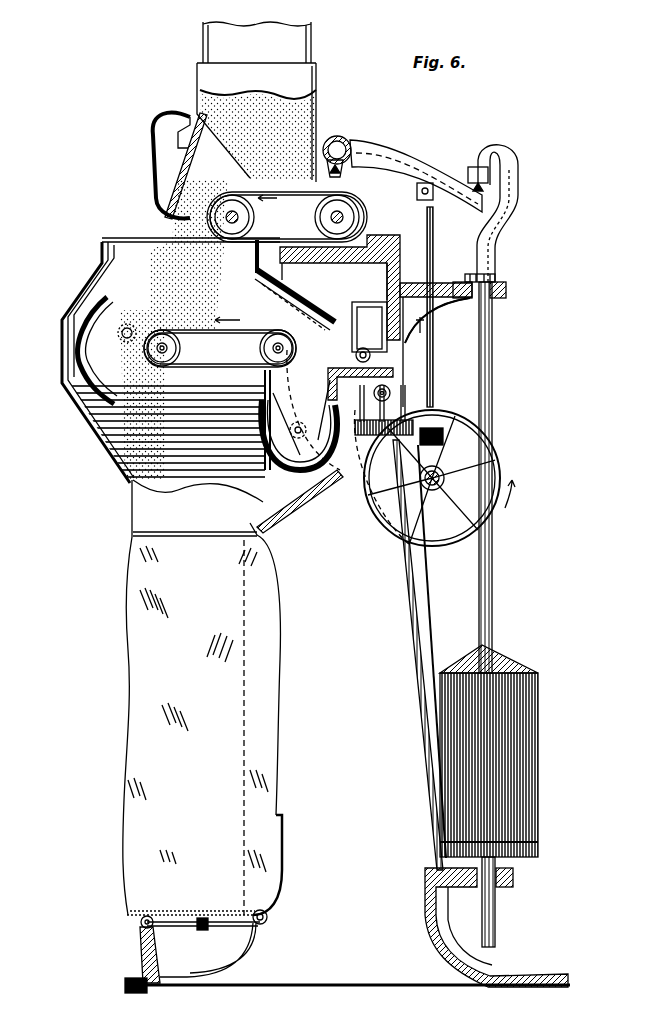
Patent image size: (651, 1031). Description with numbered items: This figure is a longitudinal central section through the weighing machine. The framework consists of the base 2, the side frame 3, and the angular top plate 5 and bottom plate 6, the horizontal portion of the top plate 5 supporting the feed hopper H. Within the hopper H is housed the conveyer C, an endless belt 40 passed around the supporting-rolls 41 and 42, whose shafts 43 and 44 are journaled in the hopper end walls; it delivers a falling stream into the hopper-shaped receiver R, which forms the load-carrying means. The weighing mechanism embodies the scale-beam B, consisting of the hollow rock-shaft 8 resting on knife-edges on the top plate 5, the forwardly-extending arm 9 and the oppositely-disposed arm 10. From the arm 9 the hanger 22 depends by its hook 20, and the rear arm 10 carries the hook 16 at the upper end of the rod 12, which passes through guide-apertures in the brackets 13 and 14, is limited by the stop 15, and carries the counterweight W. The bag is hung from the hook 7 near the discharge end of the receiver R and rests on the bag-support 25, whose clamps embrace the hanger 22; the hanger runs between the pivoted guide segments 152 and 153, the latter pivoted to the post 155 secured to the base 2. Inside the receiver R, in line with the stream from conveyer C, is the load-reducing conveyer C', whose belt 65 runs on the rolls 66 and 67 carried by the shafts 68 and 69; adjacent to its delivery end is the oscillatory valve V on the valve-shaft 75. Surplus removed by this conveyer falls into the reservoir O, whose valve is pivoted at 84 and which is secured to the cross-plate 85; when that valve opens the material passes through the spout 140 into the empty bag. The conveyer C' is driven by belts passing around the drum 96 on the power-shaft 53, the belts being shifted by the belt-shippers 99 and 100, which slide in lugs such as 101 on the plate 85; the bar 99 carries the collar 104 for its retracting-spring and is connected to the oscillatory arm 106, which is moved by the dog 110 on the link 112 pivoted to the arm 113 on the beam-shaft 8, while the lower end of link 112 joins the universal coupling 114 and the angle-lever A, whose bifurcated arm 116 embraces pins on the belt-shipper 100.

The base 2 is at (372, 986).
The side frame 3 is at (420, 630).
The top plate 5 is at (376, 321).
The bottom plate 6 is at (440, 924).
The hook 7 is at (128, 537).
The hollow shaft 8 is at (345, 138).
The parallel arm 9 is at (327, 143).
The oppositely-disposed arm 10 is at (400, 156).
The longitudinal rod 12 is at (493, 352).
The bracket 13 is at (506, 292).
The bracket 14 is at (514, 878).
The stop 15 is at (494, 280).
The hook 16 is at (512, 200).
The hook 20 is at (153, 140).
The hanger 22 is at (203, 930).
The bag-support 25 is at (200, 918).
The endless belt 40 is at (287, 217).
The supporting-roll 41 is at (232, 217).
The supporting-roll 42 is at (357, 203).
The shaft 43 is at (210, 217).
The shaft 44 is at (343, 217).
The power-shaft 53 is at (430, 485).
The endless belt 65 is at (222, 362).
The roll 66 is at (150, 351).
The roll 67 is at (290, 322).
The shaft 68 is at (160, 344).
The shaft 69 is at (303, 332).
The valve-shaft 75 is at (122, 332).
The pivot 84 is at (298, 423).
The cross-plate 85 is at (360, 353).
The drum 96 is at (449, 547).
The belt-shipper 99 is at (362, 353).
The belt-shipper 100 is at (392, 390).
The lug 101 is at (366, 364).
The collar 104 is at (372, 340).
The oscillatory arm 106 is at (369, 327).
The belt-shipper actuator 110 is at (410, 340).
The link 112 is at (435, 240).
The arm 113 is at (388, 179).
The universal coupling device 114 is at (494, 455).
The arm 116 is at (298, 400).
The spout 140 is at (300, 497).
The segment 152 is at (248, 932).
The segment 153 is at (141, 940).
The post 155 is at (138, 975).
The feed hopper H is at (233, 176).
The scale-beam B is at (416, 167).
The conveyer C is at (290, 209).
The valve V is at (68, 364).
The receiver R is at (84, 411).
The reservoir O is at (262, 456).
The counterweight W is at (540, 743).
The angle-lever A is at (335, 472).